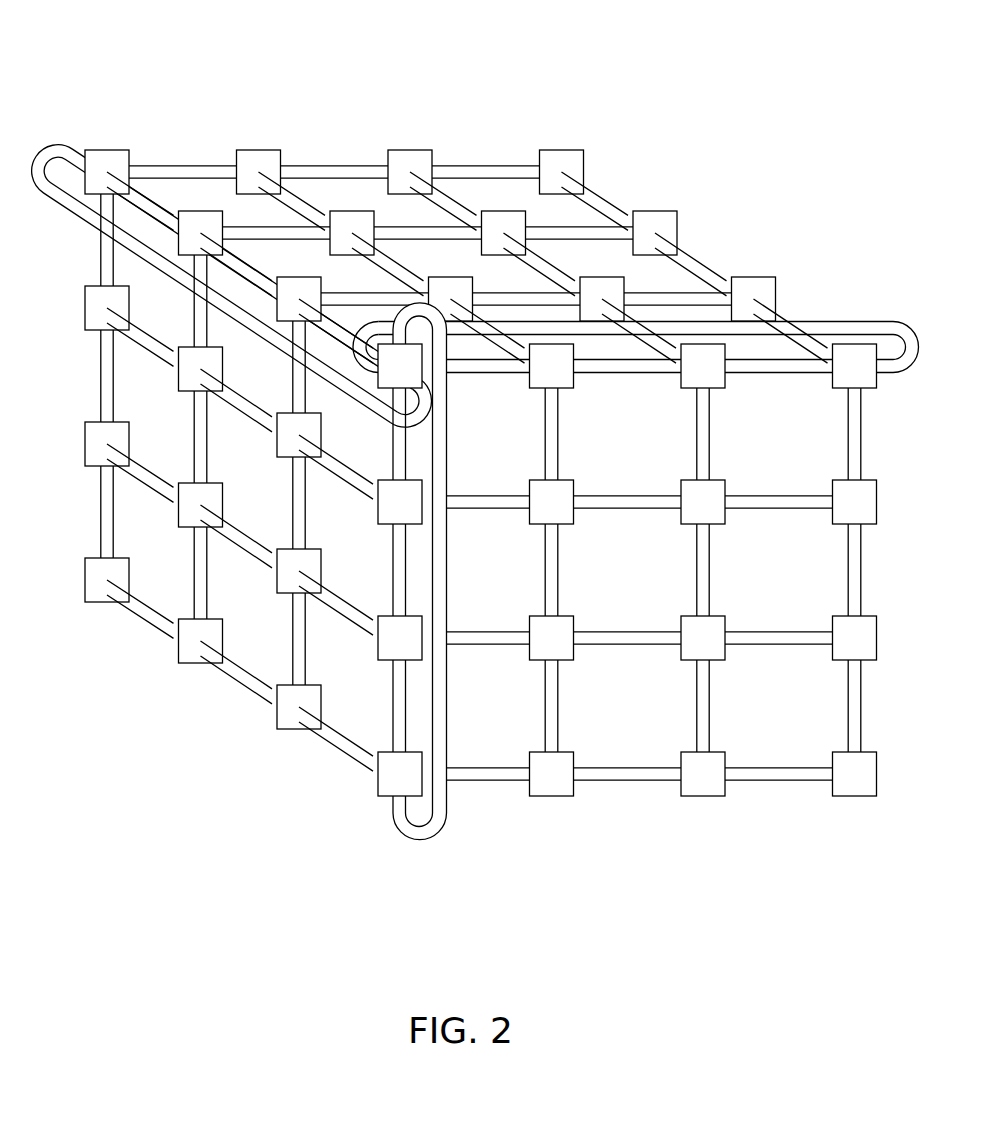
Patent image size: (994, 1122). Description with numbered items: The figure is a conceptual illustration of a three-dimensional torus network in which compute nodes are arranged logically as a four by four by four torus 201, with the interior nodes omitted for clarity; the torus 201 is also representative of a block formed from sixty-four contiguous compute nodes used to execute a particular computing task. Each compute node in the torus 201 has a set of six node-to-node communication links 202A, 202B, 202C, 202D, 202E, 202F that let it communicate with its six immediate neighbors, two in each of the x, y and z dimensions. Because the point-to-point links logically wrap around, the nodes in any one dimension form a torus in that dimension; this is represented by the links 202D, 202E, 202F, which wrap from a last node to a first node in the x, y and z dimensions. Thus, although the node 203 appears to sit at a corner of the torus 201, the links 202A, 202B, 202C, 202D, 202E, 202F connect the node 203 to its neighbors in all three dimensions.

The torus 201 is at (470, 445).
The node-to-node communication link 202A is at (471, 373).
The node-to-node communication link 202B is at (447, 459).
The node-to-node communication link 202C is at (352, 342).
The node-to-node communication link 202D is at (882, 321).
The node-to-node communication link 202E is at (421, 840).
The node-to-node communication link 202F is at (48, 144).
The node 203 is at (378, 378).